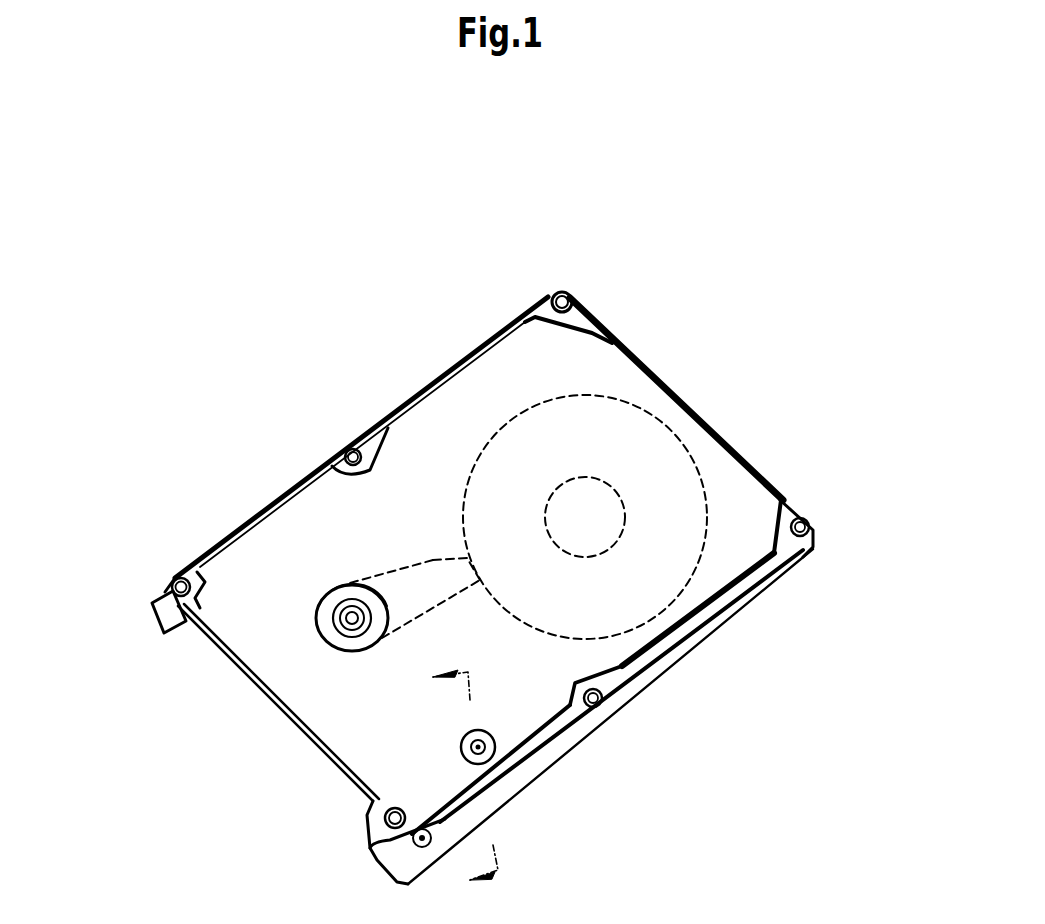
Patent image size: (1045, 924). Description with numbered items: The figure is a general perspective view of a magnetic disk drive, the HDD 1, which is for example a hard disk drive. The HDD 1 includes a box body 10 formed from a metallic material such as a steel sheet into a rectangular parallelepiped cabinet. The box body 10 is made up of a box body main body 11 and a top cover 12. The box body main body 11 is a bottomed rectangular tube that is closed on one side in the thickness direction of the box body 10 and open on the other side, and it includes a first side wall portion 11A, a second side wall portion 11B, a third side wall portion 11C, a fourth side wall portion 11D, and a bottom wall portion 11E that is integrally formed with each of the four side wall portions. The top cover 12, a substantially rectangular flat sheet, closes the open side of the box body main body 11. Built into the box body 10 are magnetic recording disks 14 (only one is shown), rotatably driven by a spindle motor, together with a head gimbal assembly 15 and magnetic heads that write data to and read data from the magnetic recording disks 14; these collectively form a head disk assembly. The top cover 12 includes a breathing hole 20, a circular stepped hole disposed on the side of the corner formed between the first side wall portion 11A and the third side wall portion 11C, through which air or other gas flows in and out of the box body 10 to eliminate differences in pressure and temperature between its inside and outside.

The HDD 1 is at (745, 293).
The box body 10 is at (243, 523).
The box body main body 11 is at (703, 642).
The first side wall portion 11A is at (240, 673).
The second side wall portion 11B is at (793, 503).
The third side wall portion 11C is at (623, 713).
The fourth side wall portion 11D is at (370, 434).
The bottom wall portion 11E is at (365, 800).
The top cover 12 is at (357, 723).
The magnetic recording disk 14 is at (703, 425).
The head gimbal assembly 15 is at (433, 560).
The breathing hole 20 is at (497, 750).